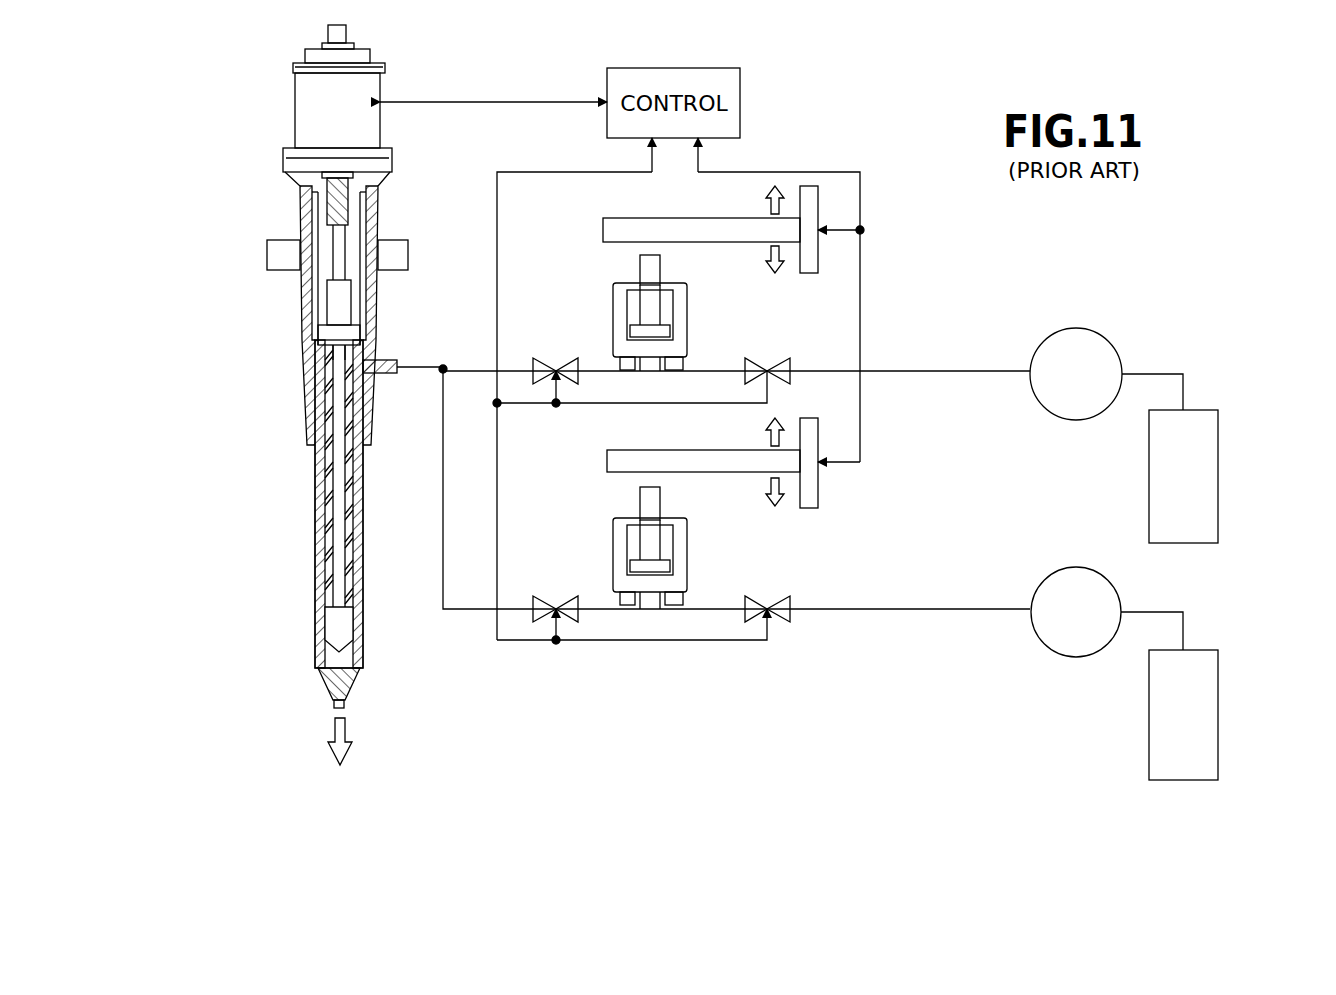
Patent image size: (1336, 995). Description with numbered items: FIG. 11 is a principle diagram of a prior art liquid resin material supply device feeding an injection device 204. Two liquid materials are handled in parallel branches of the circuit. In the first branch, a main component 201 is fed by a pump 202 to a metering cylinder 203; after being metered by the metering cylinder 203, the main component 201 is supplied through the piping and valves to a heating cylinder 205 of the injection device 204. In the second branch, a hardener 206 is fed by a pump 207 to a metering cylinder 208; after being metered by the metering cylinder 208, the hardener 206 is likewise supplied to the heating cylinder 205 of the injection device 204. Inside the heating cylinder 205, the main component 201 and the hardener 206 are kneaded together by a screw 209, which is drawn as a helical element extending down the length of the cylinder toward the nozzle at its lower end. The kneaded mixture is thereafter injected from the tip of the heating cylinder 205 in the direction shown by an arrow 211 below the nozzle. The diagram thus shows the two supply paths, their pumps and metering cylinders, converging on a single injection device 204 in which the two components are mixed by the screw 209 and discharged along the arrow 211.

The main component 201 is at (1205, 460).
The pump 202 is at (1097, 350).
The metering cylinder 203 is at (687, 318).
The injection device 204 is at (290, 319).
The heating cylinder 205 is at (314, 479).
The hardener 206 is at (1205, 700).
The pump 207 is at (1108, 598).
The metering cylinder 208 is at (687, 555).
The screw 209 is at (340, 628).
The arrow 211 is at (348, 728).